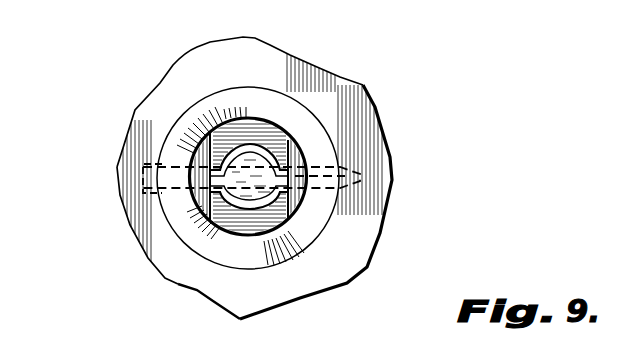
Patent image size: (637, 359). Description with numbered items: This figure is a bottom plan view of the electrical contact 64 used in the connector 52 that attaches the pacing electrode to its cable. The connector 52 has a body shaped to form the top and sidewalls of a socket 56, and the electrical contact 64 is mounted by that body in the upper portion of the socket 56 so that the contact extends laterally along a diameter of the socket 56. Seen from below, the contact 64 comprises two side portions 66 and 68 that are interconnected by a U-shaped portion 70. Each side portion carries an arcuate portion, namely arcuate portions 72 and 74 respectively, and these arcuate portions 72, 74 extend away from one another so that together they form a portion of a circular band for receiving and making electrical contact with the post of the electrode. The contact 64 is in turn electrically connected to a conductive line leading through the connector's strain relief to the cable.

The connector 52 is at (183, 76).
The socket 56 is at (243, 221).
The electrical contact 64 is at (271, 147).
The side portion 66 is at (183, 160).
The side portion 68 is at (152, 201).
The U-shaped portion 70 is at (362, 178).
The arcuate portion 72 is at (252, 145).
The arcuate portion 74 is at (262, 210).